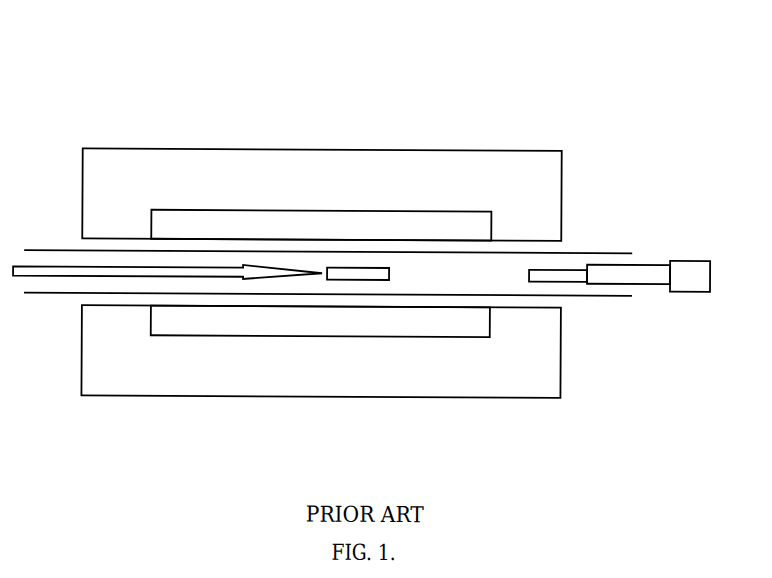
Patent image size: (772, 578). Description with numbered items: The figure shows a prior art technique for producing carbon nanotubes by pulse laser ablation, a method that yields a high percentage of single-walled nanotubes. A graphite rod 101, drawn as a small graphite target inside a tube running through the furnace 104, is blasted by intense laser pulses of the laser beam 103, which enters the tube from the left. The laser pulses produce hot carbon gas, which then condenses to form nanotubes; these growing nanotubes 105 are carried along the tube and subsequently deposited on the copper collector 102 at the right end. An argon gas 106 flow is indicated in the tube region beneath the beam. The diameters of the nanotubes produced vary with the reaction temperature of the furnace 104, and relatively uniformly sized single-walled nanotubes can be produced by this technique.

The graphite rod 101 is at (357, 275).
The copper collector 102 is at (645, 277).
The laser beam 103 is at (184, 277).
The furnace 104 is at (165, 318).
The growing nanotubes 105 is at (535, 274).
The argon gas 106 is at (243, 288).